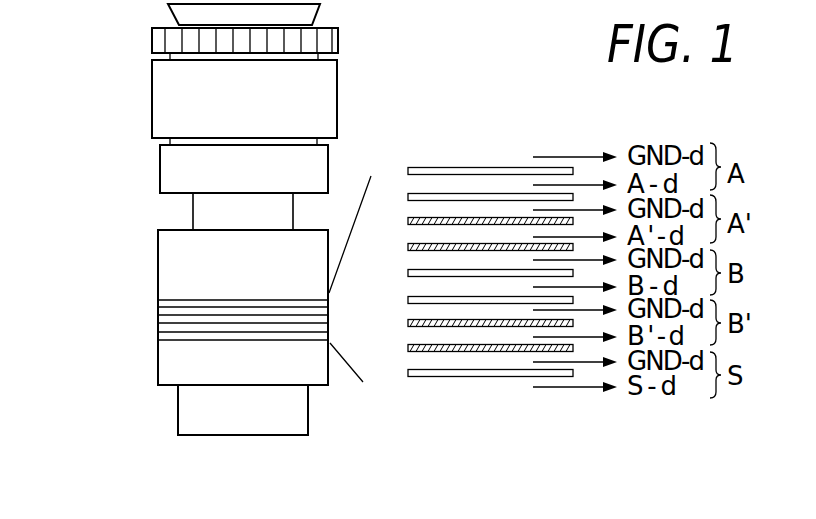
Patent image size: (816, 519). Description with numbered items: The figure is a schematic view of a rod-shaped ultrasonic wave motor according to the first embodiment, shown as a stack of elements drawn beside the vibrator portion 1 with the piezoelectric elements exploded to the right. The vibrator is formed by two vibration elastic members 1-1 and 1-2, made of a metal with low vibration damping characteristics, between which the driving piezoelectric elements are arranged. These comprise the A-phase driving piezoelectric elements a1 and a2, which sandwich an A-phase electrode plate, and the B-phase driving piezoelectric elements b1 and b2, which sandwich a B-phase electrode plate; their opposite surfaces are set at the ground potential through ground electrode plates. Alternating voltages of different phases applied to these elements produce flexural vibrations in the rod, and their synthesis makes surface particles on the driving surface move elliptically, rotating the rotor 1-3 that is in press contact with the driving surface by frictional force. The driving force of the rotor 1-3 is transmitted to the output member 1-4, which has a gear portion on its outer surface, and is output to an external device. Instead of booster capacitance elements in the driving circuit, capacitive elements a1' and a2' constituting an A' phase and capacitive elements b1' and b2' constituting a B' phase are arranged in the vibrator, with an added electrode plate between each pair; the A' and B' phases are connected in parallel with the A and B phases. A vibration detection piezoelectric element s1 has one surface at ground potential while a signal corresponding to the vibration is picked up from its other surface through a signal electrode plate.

The vibrator portion 1 is at (78, 155).
The vibration elastic member 1-1 is at (167, 362).
The vibration elastic member 1-2 is at (168, 250).
The rotor 1-3 is at (337, 100).
The output member 1-4 is at (338, 43).
The A-phase driving piezoelectric element a1 is at (471, 172).
The A-phase driving piezoelectric element a2 is at (471, 198).
The capacitive element a1' is at (471, 223).
The capacitive element a2' is at (471, 249).
The B-phase driving piezoelectric element b1 is at (471, 275).
The B-phase driving piezoelectric element b2 is at (471, 301).
The capacitive element b1' is at (471, 325).
The capacitive element b2' is at (471, 350).
The vibration detection piezoelectric element s1 is at (471, 375).